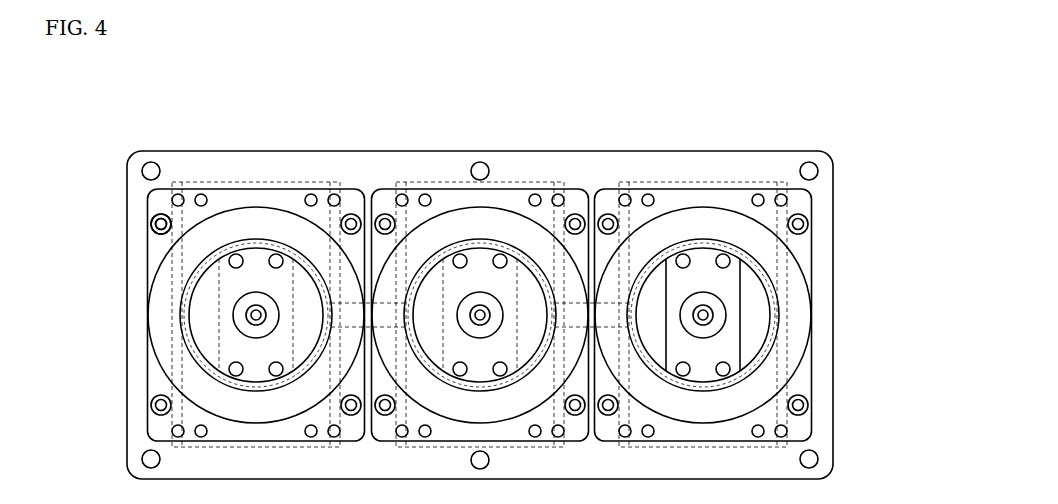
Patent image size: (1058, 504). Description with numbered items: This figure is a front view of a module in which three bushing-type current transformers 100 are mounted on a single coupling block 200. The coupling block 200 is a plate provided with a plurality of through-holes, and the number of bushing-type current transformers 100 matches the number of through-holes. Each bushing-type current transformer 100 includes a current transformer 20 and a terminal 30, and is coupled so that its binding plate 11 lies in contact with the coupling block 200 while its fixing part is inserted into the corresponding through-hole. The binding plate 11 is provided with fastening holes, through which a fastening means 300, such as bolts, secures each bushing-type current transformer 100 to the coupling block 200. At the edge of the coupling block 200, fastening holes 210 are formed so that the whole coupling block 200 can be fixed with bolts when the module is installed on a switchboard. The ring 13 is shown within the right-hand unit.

The bushing-type current transformer 100 is at (778, 314).
The binding plate 11 is at (805, 380).
The motor flange ring 13 is at (773, 317).
The current transformer 20 is at (788, 292).
The terminal 30 is at (718, 320).
The coupling block 200 is at (723, 162).
The fastening holes 210 is at (808, 170).
The fastening means 300 is at (164, 214).